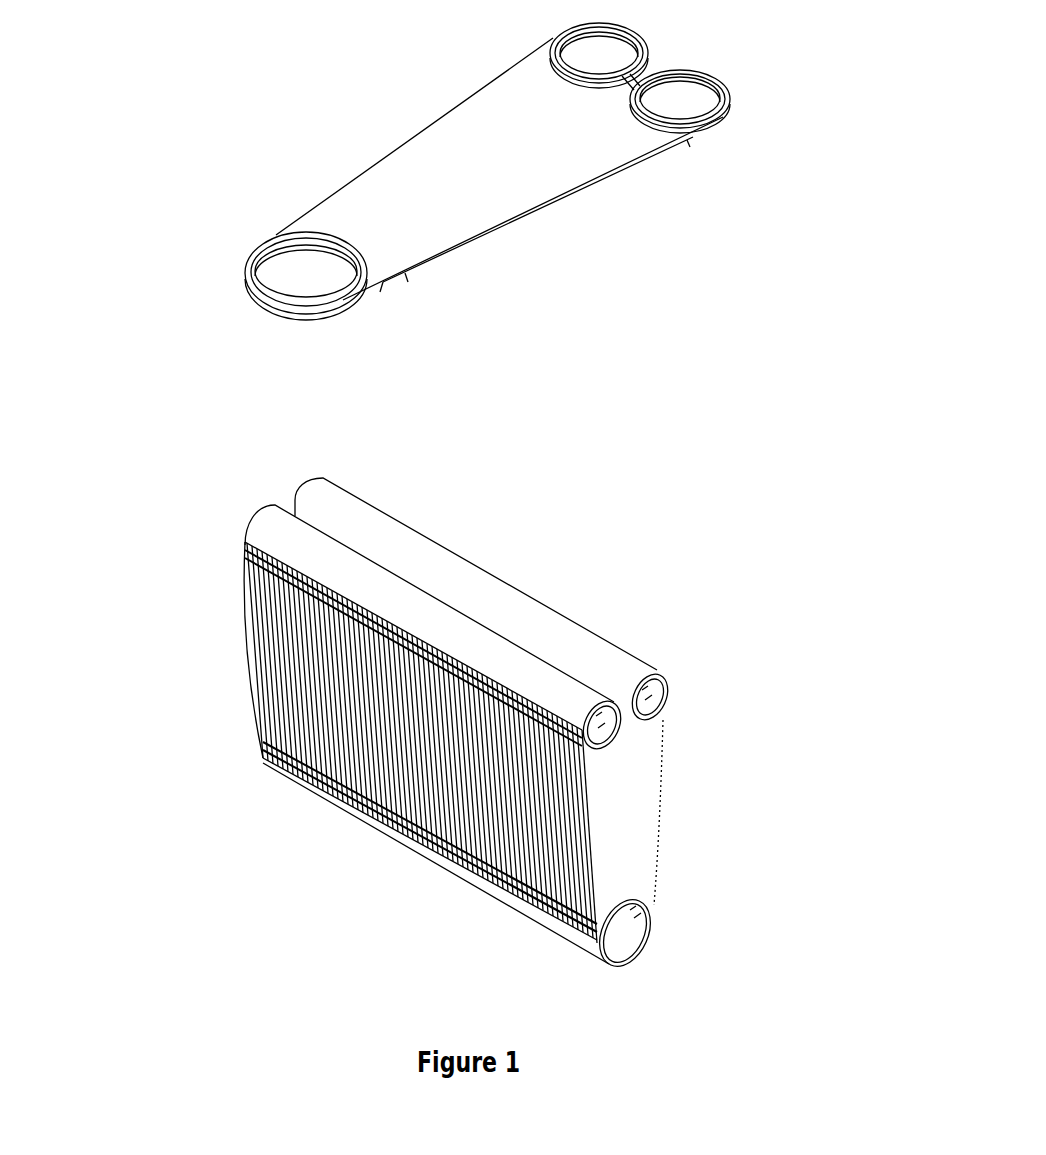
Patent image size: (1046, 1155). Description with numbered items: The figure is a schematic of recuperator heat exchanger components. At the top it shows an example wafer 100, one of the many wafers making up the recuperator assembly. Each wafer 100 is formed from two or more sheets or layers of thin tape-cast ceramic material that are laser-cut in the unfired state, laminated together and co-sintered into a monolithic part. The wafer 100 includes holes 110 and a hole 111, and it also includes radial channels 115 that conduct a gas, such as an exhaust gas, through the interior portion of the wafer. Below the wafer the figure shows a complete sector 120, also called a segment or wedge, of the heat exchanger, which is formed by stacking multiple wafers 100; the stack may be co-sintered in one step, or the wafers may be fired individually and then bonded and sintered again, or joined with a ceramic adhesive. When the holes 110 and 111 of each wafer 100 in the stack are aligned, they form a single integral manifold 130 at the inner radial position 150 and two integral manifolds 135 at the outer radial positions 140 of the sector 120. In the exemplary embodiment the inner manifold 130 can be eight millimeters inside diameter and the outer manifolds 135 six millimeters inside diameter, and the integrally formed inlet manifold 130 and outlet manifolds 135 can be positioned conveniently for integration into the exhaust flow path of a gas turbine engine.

The wafer 100 is at (335, 83).
The holes 110 is at (611, 55).
The radial channels 115 is at (308, 236).
The hole 111 is at (302, 281).
The sector 120 is at (432, 741).
The inner manifold 130 is at (625, 944).
The outer manifolds 135 is at (606, 728).
The outer radial position 140 is at (513, 566).
The inner radial position 150 is at (417, 866).